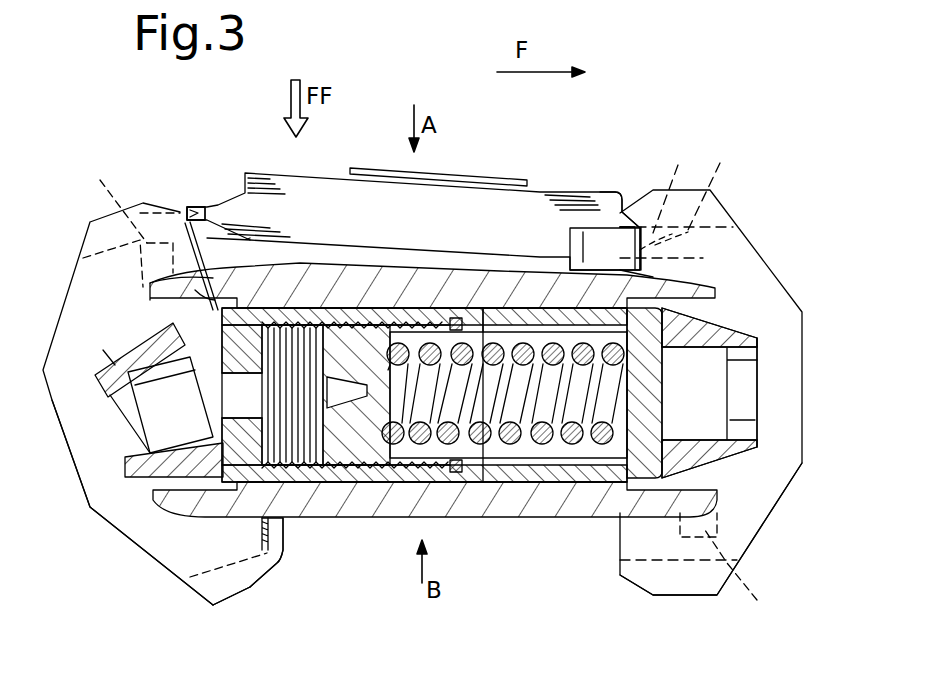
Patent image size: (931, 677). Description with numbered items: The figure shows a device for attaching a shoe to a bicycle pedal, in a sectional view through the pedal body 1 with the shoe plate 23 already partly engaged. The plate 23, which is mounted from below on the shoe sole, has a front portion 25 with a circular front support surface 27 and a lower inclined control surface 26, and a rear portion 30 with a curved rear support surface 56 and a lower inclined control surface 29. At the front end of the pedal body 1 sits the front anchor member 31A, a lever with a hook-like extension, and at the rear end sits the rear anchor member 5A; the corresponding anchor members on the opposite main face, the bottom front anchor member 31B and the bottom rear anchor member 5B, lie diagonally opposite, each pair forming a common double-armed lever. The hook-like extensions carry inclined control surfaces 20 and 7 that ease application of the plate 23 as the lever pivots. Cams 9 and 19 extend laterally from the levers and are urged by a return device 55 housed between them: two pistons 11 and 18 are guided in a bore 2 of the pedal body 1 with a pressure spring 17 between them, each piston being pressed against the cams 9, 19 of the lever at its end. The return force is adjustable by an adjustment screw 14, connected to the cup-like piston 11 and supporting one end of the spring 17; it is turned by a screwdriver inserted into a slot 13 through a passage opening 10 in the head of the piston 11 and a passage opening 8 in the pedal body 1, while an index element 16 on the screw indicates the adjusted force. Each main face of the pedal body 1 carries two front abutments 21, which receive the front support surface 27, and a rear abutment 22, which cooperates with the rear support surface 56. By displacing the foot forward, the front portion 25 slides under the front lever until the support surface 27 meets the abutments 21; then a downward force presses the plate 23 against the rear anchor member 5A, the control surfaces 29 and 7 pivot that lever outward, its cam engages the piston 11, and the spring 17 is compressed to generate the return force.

The pedal body 1 is at (507, 503).
The bore 2 is at (470, 484).
The rear anchor member 5A is at (87, 290).
The bottom rear anchor member 5B is at (753, 520).
The control surface 7 is at (157, 200).
The passage opening 8 is at (113, 417).
The cam 9 is at (805, 330).
The passage opening 10 is at (233, 397).
The piston 11 is at (363, 472).
The slot 13 is at (338, 378).
The adjustment screw 14 is at (362, 320).
The index element 16 is at (457, 483).
The pressure spring 17 is at (545, 467).
The piston 18 is at (603, 470).
The cam 19 is at (103, 350).
The inclined control surface 20 is at (650, 200).
The front abutment 21 is at (582, 243).
The rear abutment 22 is at (433, 380).
The plate 23 is at (337, 186).
The front portion 25 is at (676, 186).
The control surface 26 is at (677, 253).
The front support surface 27 is at (698, 192).
The control surface 29 is at (213, 300).
The rear portion 30 is at (212, 207).
The front anchor member 31A is at (757, 258).
The bottom front anchor member 31B is at (167, 557).
The return device 55 is at (485, 317).
The rear support surface 56 is at (191, 207).